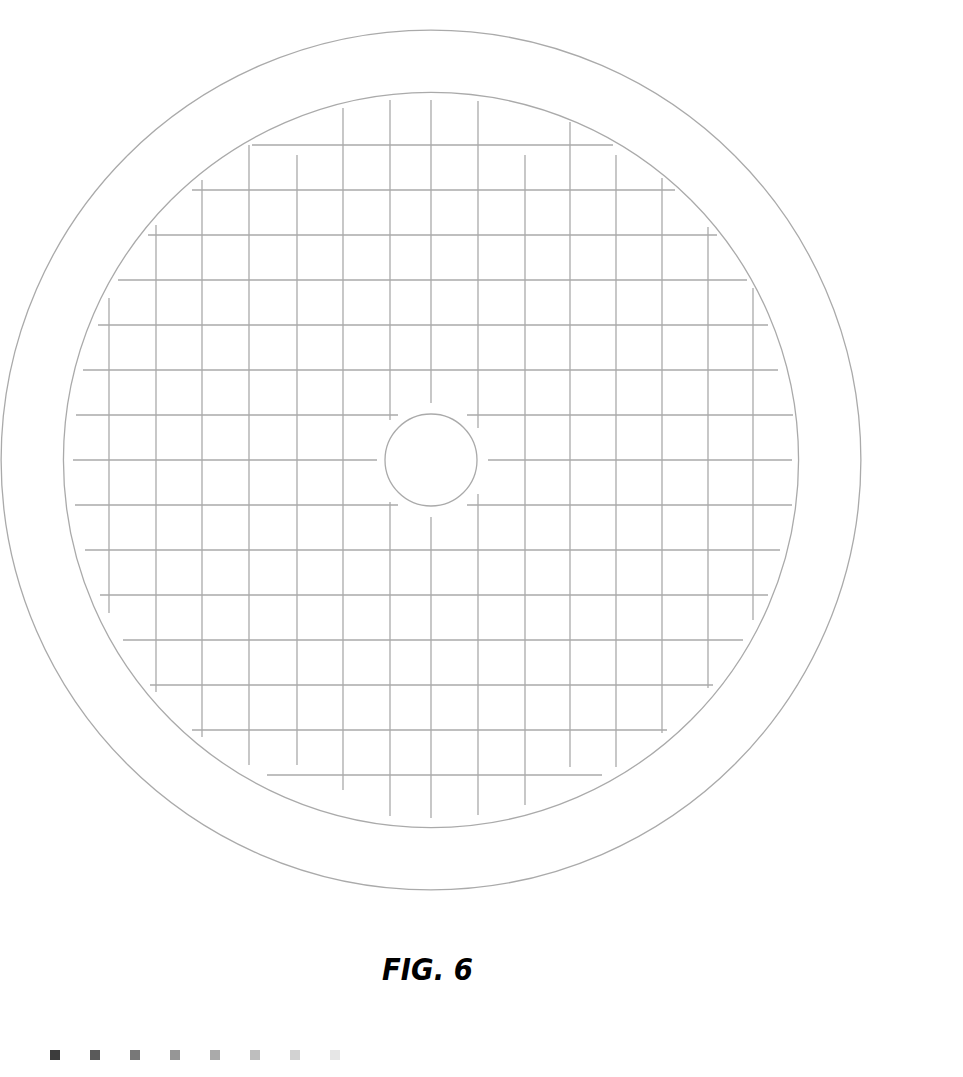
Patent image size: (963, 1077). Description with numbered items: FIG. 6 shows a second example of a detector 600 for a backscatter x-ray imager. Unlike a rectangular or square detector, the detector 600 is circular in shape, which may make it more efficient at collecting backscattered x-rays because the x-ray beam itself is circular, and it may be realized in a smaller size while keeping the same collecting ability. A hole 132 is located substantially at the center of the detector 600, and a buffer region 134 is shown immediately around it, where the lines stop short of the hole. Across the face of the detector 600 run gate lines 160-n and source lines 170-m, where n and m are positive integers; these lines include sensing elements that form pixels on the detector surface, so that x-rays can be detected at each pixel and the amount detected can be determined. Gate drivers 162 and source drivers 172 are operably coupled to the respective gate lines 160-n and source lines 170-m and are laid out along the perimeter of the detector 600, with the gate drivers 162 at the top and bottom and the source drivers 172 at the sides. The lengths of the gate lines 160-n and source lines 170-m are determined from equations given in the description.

The detector 600 is at (257, 49).
The gate drivers 162 is at (500, 865).
The source drivers 172 is at (431, 460).
The gate lines 160-n is at (525, 215).
The source lines 170-m is at (770, 870).
The hole 132 is at (447, 483).
The buffer region 134 is at (497, 452).